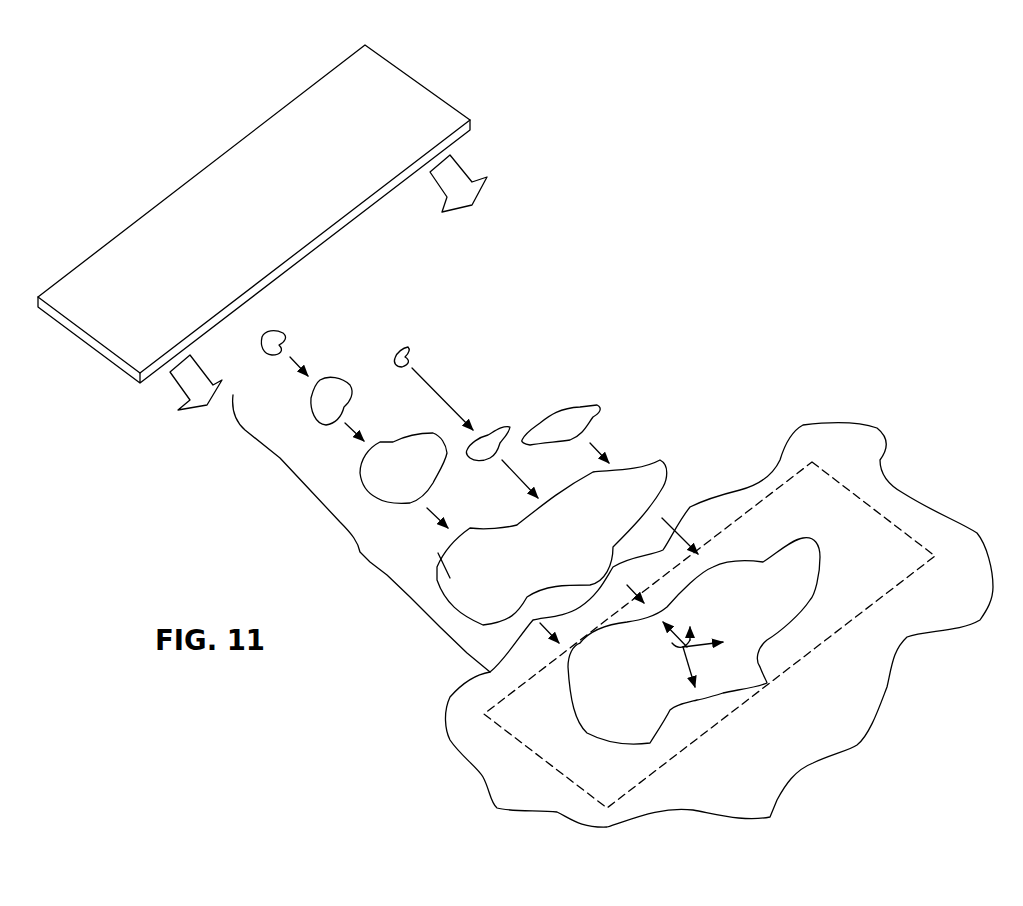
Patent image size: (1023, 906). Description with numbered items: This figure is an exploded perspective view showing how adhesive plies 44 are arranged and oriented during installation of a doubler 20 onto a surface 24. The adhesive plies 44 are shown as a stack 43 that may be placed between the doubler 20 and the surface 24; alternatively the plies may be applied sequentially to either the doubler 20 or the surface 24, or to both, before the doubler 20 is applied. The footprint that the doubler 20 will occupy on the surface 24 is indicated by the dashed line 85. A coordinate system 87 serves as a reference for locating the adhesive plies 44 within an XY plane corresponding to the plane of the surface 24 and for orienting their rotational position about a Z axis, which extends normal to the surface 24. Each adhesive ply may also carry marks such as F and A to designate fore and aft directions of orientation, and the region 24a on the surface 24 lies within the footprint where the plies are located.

The doubler 20 is at (108, 277).
The adhesive plies 44 is at (333, 393).
The stack 43 is at (358, 548).
The surface 24 is at (923, 515).
The deposited region of substrate 24a is at (823, 573).
The dashed line 85 is at (833, 462).
The coordinate system 87 is at (725, 673).